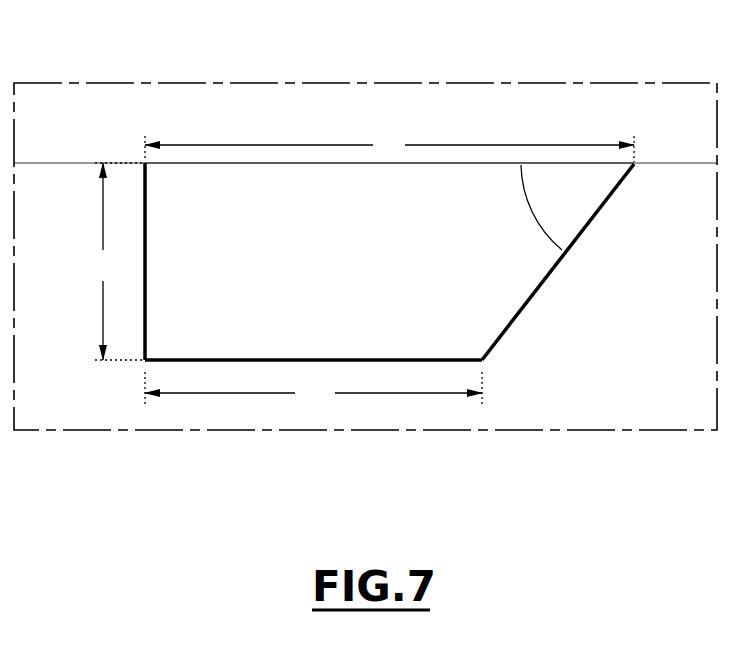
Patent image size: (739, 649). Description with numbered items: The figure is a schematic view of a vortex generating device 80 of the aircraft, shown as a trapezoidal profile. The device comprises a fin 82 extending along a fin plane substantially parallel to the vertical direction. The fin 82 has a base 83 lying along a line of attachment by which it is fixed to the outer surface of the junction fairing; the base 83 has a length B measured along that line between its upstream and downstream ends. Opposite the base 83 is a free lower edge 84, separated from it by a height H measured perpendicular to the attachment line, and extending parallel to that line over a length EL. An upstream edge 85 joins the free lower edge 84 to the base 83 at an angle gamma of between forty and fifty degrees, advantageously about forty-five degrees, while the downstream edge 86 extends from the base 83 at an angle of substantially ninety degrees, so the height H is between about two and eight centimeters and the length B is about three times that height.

The vortex generating device 80 is at (257, 127).
The fin 82 is at (342, 225).
The base 83 is at (472, 165).
The free lower edge 84 is at (401, 362).
The upstream edge 85 is at (545, 287).
The downstream edge 86 is at (145, 212).